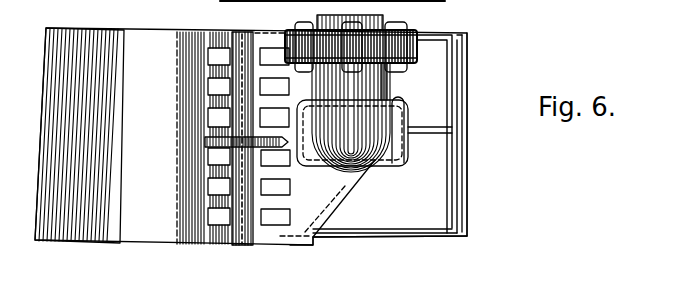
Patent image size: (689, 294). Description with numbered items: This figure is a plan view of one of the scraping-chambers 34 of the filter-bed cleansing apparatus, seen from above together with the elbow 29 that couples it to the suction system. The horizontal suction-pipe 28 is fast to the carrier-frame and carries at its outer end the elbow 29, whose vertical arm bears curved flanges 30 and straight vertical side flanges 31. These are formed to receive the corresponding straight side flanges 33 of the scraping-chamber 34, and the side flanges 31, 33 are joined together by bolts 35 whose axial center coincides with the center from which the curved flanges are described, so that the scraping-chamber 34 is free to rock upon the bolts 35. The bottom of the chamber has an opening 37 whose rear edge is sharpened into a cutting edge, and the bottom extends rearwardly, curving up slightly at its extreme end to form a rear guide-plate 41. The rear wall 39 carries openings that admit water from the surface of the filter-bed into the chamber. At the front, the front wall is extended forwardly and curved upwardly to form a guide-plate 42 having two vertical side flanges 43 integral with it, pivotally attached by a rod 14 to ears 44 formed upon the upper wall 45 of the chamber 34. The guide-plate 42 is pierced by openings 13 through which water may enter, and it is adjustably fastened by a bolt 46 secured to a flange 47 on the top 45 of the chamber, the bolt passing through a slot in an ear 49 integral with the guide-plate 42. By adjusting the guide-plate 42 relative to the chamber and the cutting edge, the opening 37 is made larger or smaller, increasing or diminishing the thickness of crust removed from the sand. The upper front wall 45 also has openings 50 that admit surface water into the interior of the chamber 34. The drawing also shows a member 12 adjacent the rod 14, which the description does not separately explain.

The guide strip 12 is at (246, 228).
The openings 13 is at (237, 218).
The rod 14 is at (253, 226).
The horizontal suction-pipe 28 is at (380, 18).
The elbow 29 is at (385, 80).
The curved flanges 30 is at (403, 127).
The straight vertical side flanges 31 is at (392, 162).
The straight side flanges 33 is at (407, 163).
The scraping-chamber 34 is at (467, 181).
The bolts 35 is at (345, 100).
The opening 37 is at (242, 1).
The rear wall 39 is at (337, 213).
The rear guide-plate 41 is at (463, 83).
The guide-plate 42 is at (100, 238).
The vertical side flanges 43 is at (330, 245).
The ears 44 is at (230, 62).
The upper wall 45 is at (382, 213).
The bolt 46 is at (233, 127).
The flange 47 is at (217, 149).
The ear 49 is at (225, 134).
The openings 50 is at (279, 216).